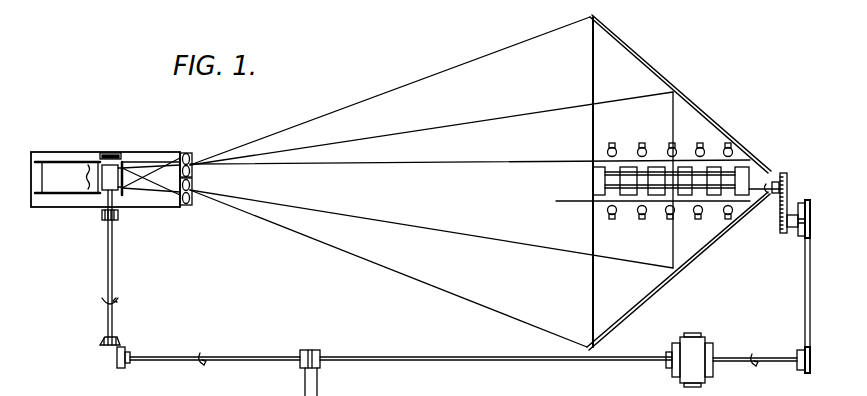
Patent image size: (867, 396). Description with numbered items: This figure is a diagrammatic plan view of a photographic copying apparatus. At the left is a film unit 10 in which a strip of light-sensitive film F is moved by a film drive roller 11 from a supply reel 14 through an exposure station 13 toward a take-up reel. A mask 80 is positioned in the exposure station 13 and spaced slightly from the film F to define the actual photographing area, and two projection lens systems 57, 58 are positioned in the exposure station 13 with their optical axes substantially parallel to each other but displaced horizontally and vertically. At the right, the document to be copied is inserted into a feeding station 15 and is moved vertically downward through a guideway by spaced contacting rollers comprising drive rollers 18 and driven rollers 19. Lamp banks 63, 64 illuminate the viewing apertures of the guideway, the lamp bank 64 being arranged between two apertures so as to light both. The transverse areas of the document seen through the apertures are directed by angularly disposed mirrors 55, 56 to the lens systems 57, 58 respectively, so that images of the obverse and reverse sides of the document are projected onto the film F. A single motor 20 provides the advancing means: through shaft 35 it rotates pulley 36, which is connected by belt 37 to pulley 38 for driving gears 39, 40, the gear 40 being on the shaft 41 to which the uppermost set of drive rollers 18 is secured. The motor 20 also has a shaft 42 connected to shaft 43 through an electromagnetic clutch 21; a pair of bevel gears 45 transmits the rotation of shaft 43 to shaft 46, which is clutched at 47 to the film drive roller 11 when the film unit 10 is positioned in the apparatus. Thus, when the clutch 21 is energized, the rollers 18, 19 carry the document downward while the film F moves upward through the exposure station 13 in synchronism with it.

The film unit 10 is at (35, 152).
The film F is at (68, 170).
The film drive roller 11 is at (103, 163).
The mask 80 is at (124, 168).
The projection lens system 57 is at (191, 156).
The projection lens system 58 is at (191, 206).
The supply reel 14 is at (50, 194).
The clutch 47 is at (103, 218).
The exposure station 13 is at (142, 207).
The shaft 46 is at (108, 265).
The bevel gears 45 is at (123, 350).
The shaft 43 is at (215, 362).
The magnetic clutch 21 is at (310, 350).
The shaft 42 is at (441, 362).
The motor 20 is at (690, 345).
The shaft 35 is at (731, 357).
The pulley 36 is at (800, 370).
The belt 37 is at (806, 283).
The pulley 38 is at (804, 236).
The gear 39 is at (787, 228).
The gear 40 is at (785, 178).
The shaft 41 is at (700, 192).
The driven rollers 19 is at (598, 168).
The feeding station 15 is at (600, 180).
The drive rollers 18 is at (600, 190).
The lamp bank 63 is at (656, 143).
The lamp bank 64 is at (668, 216).
The mirror 55 is at (652, 76).
The mirror 56 is at (662, 285).